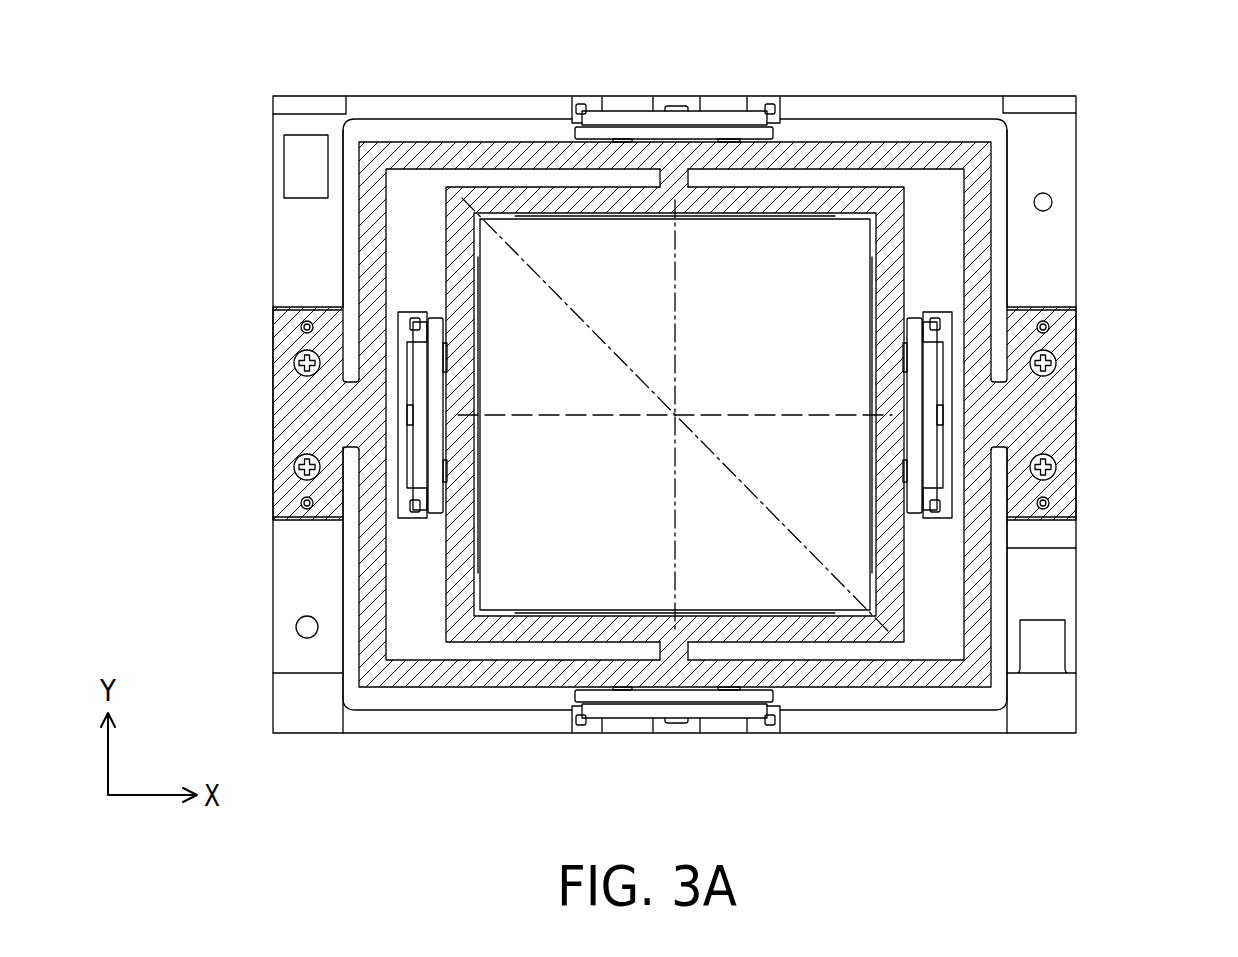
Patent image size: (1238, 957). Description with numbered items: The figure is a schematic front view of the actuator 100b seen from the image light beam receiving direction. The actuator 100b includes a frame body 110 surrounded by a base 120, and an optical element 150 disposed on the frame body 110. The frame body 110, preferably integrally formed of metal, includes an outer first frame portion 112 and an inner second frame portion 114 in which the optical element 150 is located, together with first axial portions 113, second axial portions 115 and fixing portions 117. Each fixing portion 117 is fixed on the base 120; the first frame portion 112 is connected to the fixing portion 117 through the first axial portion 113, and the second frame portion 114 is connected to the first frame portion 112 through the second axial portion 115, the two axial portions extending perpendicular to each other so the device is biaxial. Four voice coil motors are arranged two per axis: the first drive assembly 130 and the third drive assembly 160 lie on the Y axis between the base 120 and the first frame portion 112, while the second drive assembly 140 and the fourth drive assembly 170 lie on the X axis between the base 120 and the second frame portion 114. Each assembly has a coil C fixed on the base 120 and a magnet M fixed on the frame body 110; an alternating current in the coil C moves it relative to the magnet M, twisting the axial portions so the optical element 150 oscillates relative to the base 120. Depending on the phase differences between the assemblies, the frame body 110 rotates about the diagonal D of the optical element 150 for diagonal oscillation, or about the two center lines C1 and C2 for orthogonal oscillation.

The actuator 100b is at (679, 415).
The frame body 110 is at (679, 415).
The first frame portion 112 is at (978, 535).
The first axial portion 113 is at (345, 412).
The second frame portion 114 is at (890, 572).
The second axial portion 115 is at (688, 177).
The fixing portion 117 is at (285, 327).
The base 120 is at (1052, 148).
The first drive assembly 130 is at (727, 52).
The second drive assembly 140 is at (1130, 233).
The optical element 150 is at (510, 590).
The third drive assembly 160 is at (727, 778).
The fourth drive assembly 170 is at (222, 233).
The coil C is at (627, 112).
The magnet M is at (727, 128).
The diagonal D is at (551, 292).
The center line C1 is at (796, 411).
The center line C2 is at (680, 556).